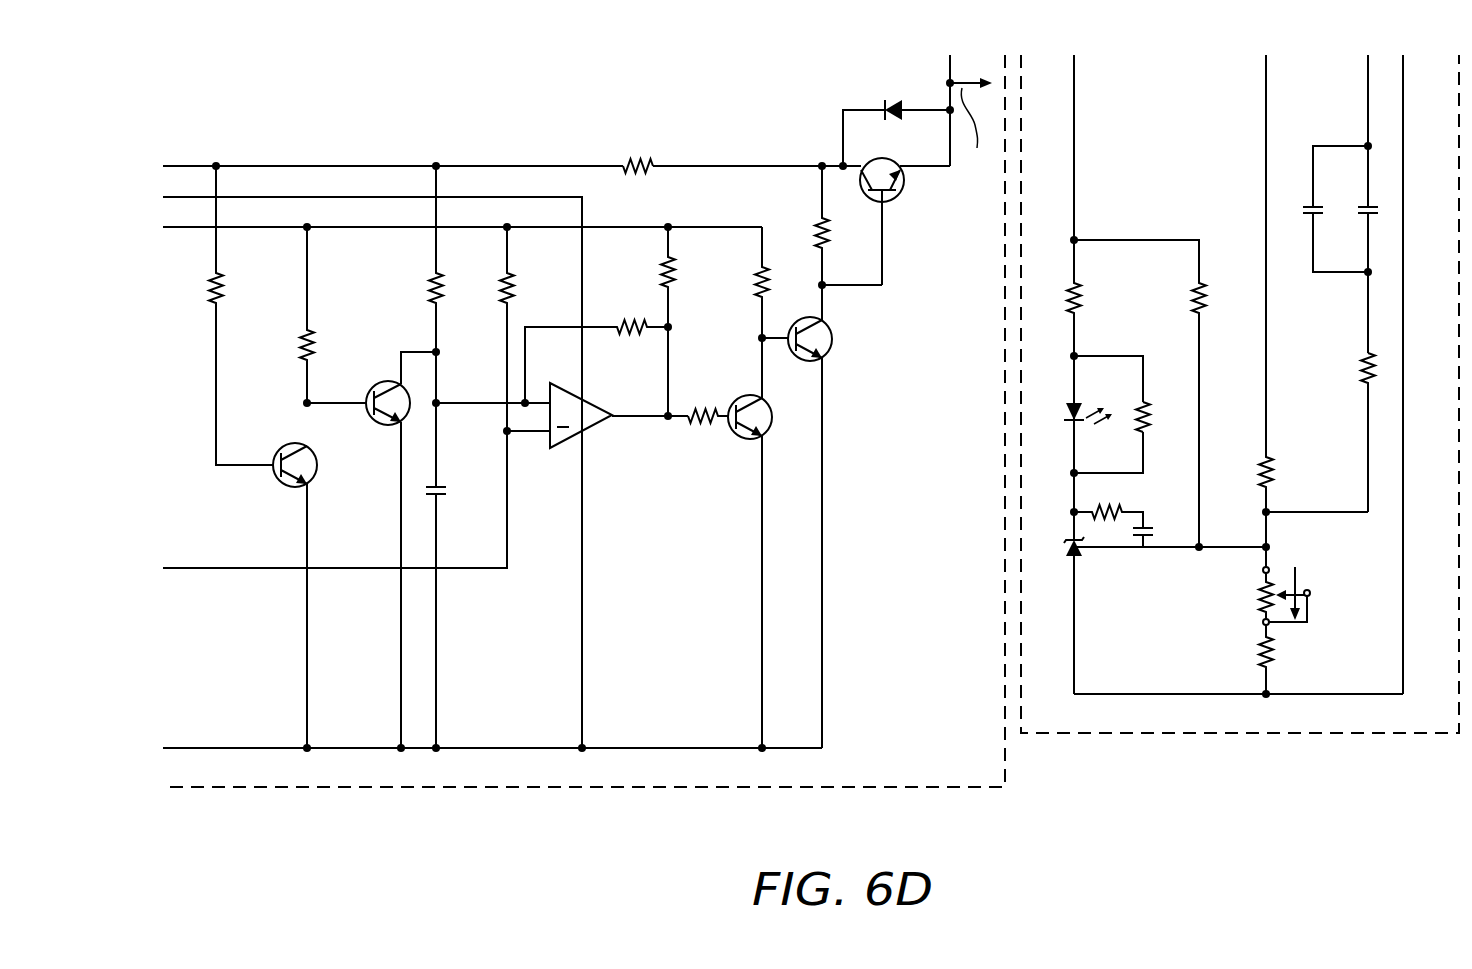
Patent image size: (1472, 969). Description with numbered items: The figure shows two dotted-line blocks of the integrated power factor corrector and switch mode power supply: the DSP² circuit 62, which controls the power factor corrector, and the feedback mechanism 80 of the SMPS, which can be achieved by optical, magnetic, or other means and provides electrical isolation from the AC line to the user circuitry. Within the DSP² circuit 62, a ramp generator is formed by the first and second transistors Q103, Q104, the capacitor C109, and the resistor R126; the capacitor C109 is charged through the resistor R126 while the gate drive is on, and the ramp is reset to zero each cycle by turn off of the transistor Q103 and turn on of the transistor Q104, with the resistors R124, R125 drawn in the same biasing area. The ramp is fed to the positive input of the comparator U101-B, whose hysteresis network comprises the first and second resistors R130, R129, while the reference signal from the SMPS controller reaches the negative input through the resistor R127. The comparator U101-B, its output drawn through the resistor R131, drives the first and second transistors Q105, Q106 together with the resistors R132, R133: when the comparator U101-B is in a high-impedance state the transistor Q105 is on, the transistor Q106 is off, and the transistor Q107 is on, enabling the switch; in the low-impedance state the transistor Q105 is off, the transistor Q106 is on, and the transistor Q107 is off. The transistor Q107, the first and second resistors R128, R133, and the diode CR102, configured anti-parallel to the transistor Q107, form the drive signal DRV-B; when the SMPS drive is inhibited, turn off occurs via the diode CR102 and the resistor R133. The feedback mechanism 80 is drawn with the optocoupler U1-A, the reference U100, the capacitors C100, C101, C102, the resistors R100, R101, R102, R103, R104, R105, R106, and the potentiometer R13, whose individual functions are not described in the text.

The DSP² circuit 62 is at (495, 790).
The feedback mechanism 80 is at (1257, 733).
The resistor R124 is at (241, 315).
The resistor R125 is at (333, 317).
The resistor R126 is at (413, 326).
The resistor R127 is at (486, 331).
The first resistor R128 is at (638, 152).
The second resistor R129 is at (596, 346).
The first resistor R130 is at (645, 321).
The second resistor R131 is at (708, 401).
The third resistor R132 is at (751, 284).
The second resistor R133 is at (827, 225).
The first transistor Q103 is at (276, 590).
The second transistor Q104 is at (383, 548).
The first transistor Q105 is at (769, 543).
The second transistor Q106 is at (830, 514).
The transistor Q107 is at (905, 170).
The capacitor C109 is at (456, 612).
The comparator U101-B is at (562, 417).
The diode CR102 is at (898, 119).
The drive signal DRV-B is at (974, 128).
The resistor R100 is at (1095, 205).
The resistor R101 is at (1164, 417).
The resistor R102 is at (1106, 502).
The resistor R103 is at (1161, 395).
The resistor R104 is at (1313, 311).
The resistor R105 is at (1244, 659).
The resistor R106 is at (1346, 431).
The potentiometer R13 is at (1280, 589).
The capacitor C100 is at (1170, 532).
The capacitor C101 is at (1322, 209).
The capacitor C102 is at (1352, 204).
The optocoupler U1-A is at (1103, 432).
The zener diode U100 is at (1096, 603).